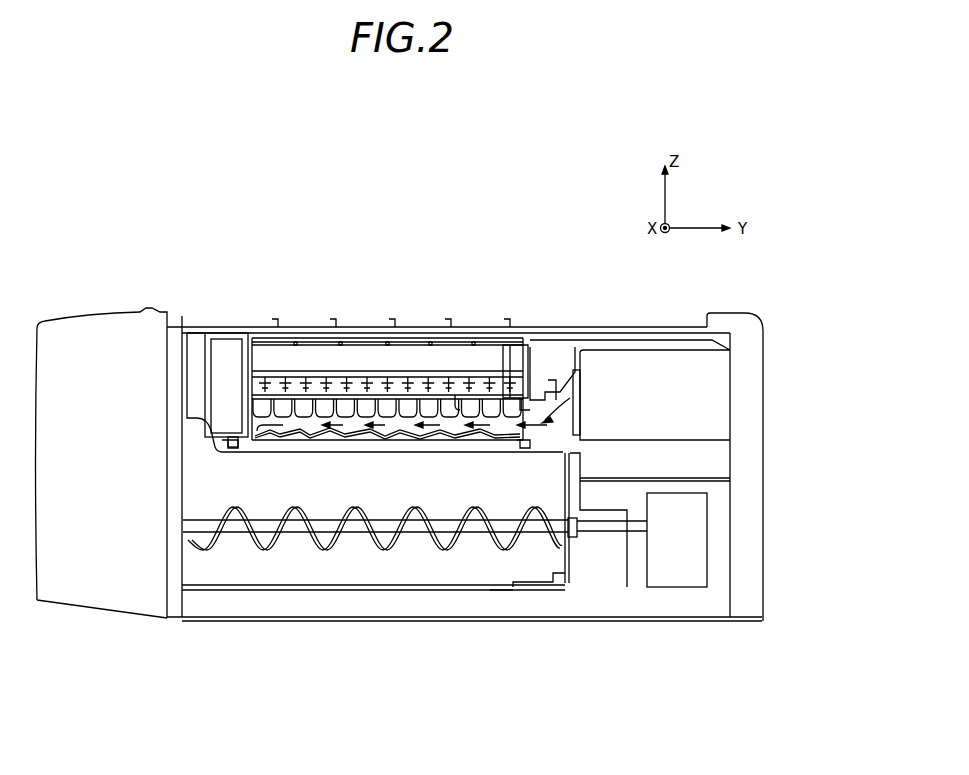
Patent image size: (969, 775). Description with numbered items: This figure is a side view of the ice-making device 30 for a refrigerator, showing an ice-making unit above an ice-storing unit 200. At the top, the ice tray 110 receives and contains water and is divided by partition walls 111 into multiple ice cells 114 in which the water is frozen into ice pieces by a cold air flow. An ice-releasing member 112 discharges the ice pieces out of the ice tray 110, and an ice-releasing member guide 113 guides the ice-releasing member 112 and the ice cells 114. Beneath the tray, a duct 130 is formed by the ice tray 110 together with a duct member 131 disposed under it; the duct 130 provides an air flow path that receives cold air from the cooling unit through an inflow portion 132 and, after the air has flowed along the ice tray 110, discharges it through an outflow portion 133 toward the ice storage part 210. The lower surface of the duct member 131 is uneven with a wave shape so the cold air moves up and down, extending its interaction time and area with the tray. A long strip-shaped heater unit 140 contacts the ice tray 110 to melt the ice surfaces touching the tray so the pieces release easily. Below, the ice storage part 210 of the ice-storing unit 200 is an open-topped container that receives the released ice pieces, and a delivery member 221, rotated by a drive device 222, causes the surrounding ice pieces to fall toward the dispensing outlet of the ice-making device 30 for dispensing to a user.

The ice-making device 30 is at (435, 745).
The ice tray 110 is at (340, 403).
The partition walls 111 is at (328, 378).
The ice-releasing member 112 is at (274, 372).
The ice-releasing member guide 113 is at (268, 384).
The ice cells 114 is at (371, 407).
The duct 130 is at (417, 428).
The duct member 131 is at (512, 428).
The inflow portion 132 is at (562, 405).
The outflow portion 133 is at (248, 460).
The heater unit 140 is at (453, 392).
The ice-storing unit 200 is at (277, 562).
The ice storage part 210 is at (365, 568).
The delivery member 221 is at (430, 528).
The drive device 222 is at (663, 567).